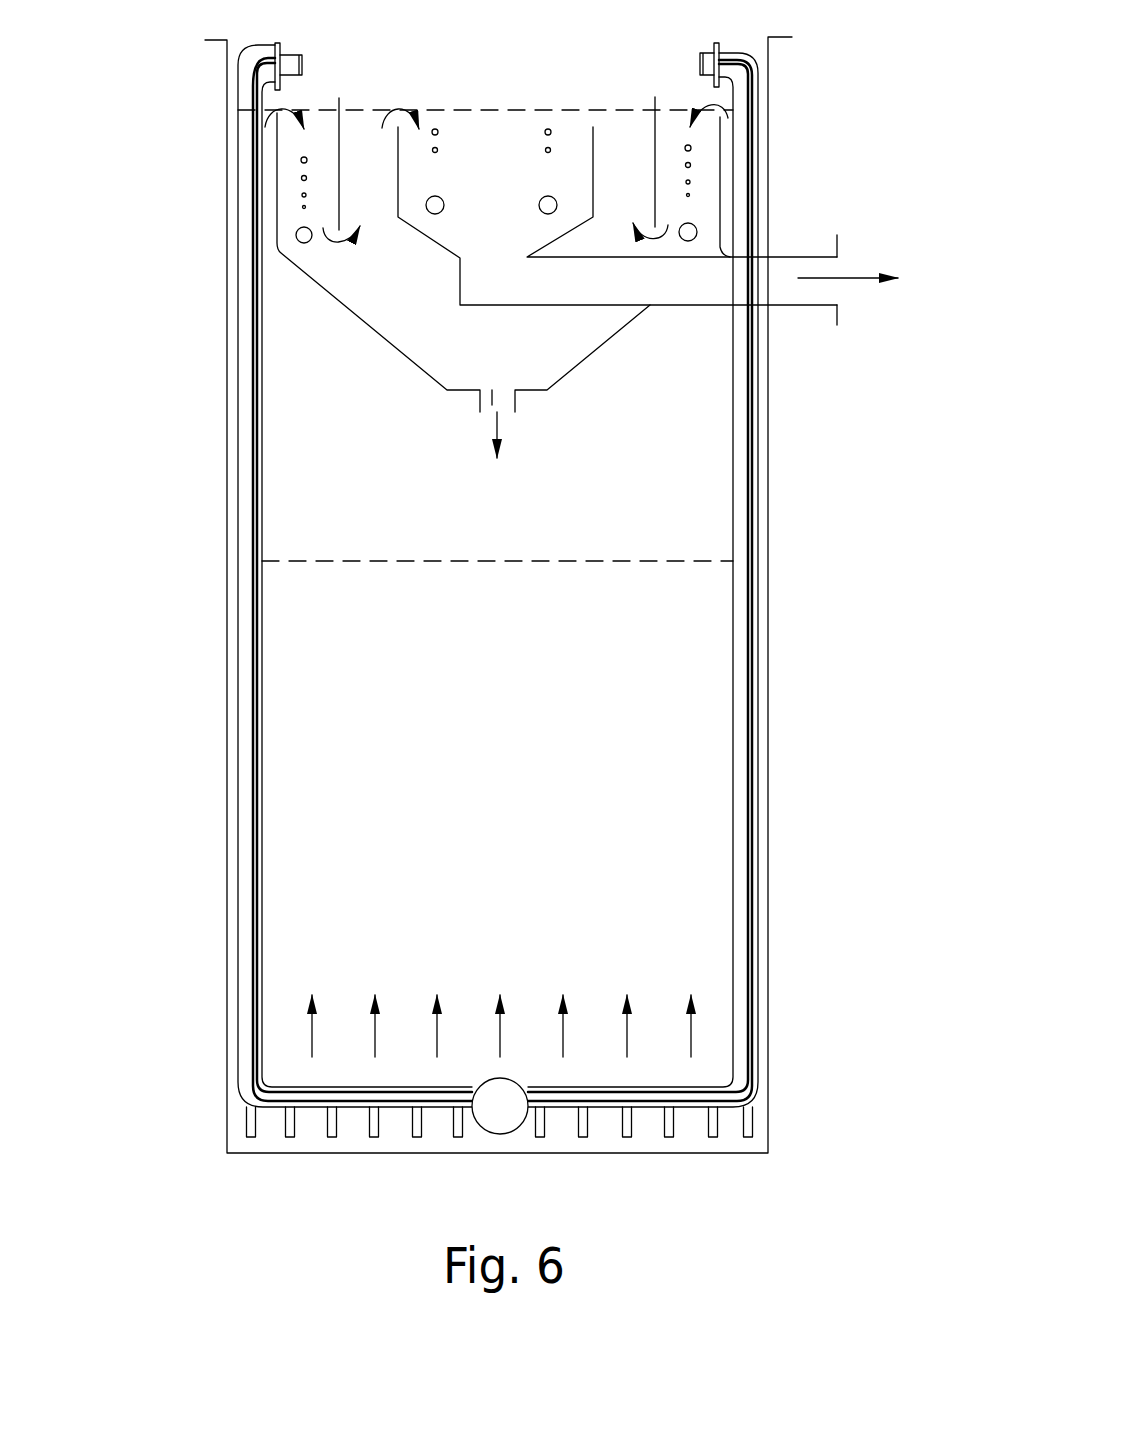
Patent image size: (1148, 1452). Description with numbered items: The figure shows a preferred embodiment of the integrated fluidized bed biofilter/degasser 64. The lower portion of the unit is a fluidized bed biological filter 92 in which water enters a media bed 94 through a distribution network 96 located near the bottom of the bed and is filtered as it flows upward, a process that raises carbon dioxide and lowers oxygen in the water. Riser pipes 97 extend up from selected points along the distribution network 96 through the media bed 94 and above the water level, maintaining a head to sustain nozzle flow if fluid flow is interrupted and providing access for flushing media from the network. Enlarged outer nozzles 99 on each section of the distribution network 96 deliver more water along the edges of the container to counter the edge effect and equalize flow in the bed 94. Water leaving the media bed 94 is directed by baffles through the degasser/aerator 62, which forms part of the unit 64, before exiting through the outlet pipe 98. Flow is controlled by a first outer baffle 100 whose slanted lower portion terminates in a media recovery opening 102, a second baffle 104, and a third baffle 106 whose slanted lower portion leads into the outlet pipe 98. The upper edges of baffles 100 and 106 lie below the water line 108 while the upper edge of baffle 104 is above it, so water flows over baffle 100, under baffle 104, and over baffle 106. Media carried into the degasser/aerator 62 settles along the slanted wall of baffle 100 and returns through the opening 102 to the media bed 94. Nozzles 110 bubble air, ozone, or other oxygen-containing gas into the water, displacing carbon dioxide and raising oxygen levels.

The degasser/aerator 62 is at (406, 84).
The integrated fluidized bed biofilter/degasser 64 is at (217, 633).
The fluidized bed biological filter 92 is at (793, 863).
The media bed 94 is at (720, 715).
The distribution network 96 is at (648, 1083).
The riser pipes 97 is at (254, 412).
The outlet pipe 98 is at (812, 307).
The enlarged outer nozzles 99 is at (247, 1128).
The first outer baffle 100 is at (278, 196).
The media recovery opening 102 is at (487, 410).
The second baffle 104 is at (655, 98).
The third baffle 106 is at (600, 135).
The water line 108 is at (565, 108).
The nozzles 110 is at (305, 244).